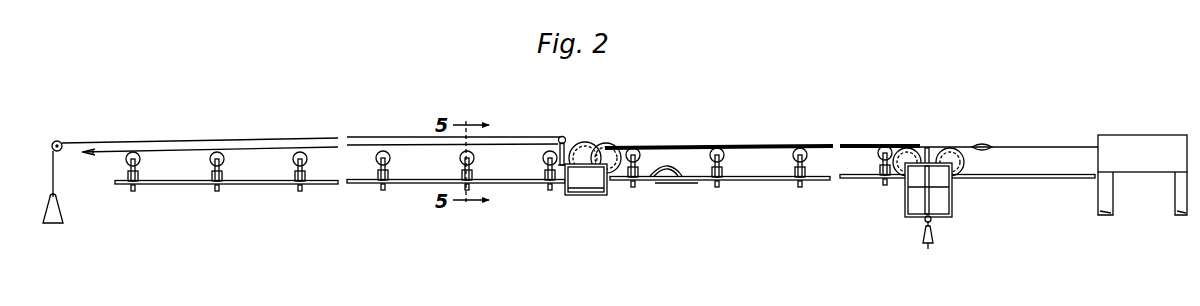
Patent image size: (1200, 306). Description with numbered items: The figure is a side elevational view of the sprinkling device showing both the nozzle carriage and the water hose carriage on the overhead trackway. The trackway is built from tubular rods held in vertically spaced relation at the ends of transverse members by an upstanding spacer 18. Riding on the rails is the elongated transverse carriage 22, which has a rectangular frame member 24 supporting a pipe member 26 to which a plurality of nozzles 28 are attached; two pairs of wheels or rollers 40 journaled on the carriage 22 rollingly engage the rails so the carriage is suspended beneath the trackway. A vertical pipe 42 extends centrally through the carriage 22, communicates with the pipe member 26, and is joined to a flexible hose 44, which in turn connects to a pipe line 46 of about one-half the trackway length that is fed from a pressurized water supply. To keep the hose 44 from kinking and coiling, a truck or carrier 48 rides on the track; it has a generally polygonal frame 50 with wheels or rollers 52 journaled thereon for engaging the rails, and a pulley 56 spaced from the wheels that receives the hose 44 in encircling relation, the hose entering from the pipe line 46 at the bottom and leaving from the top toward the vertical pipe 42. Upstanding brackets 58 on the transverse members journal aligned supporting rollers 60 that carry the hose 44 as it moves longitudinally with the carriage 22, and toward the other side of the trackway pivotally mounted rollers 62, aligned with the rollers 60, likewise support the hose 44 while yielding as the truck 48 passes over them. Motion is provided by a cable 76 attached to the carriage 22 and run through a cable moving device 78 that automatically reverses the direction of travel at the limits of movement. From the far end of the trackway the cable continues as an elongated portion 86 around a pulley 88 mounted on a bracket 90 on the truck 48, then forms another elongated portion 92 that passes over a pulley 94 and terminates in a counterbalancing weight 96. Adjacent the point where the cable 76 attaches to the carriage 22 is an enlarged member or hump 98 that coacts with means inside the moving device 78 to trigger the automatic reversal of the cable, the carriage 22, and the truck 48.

The upstanding spacer 18 is at (1001, 196).
The carriage 22 is at (904, 198).
The rectangular frame member 24 is at (951, 216).
The pipe member 26 is at (924, 222).
The nozzles 28 is at (928, 250).
The wheels or rollers 40 is at (951, 148).
The vertical pipe 42 is at (928, 148).
The flexible hose 44 is at (822, 145).
The pipe line 46 is at (967, 178).
The truck or carrier 48 is at (565, 194).
The frame 50 is at (608, 190).
The wheels or rollers 52 is at (609, 151).
The pulley 56 is at (586, 142).
The upstanding brackets 58 is at (725, 178).
The supporting roller 60 is at (719, 148).
The rollers 62 is at (302, 152).
The cable 76 is at (1049, 146).
The device for moving said cable 78 is at (1129, 134).
The elongated portion 86 is at (169, 152).
The pulley 88 is at (562, 136).
The bracket 90 is at (557, 165).
The elongated portion 92 is at (240, 140).
The pulley 94 is at (59, 141).
The counterbalancing weight 96 is at (64, 218).
The enlarged member or hump 98 is at (987, 144).